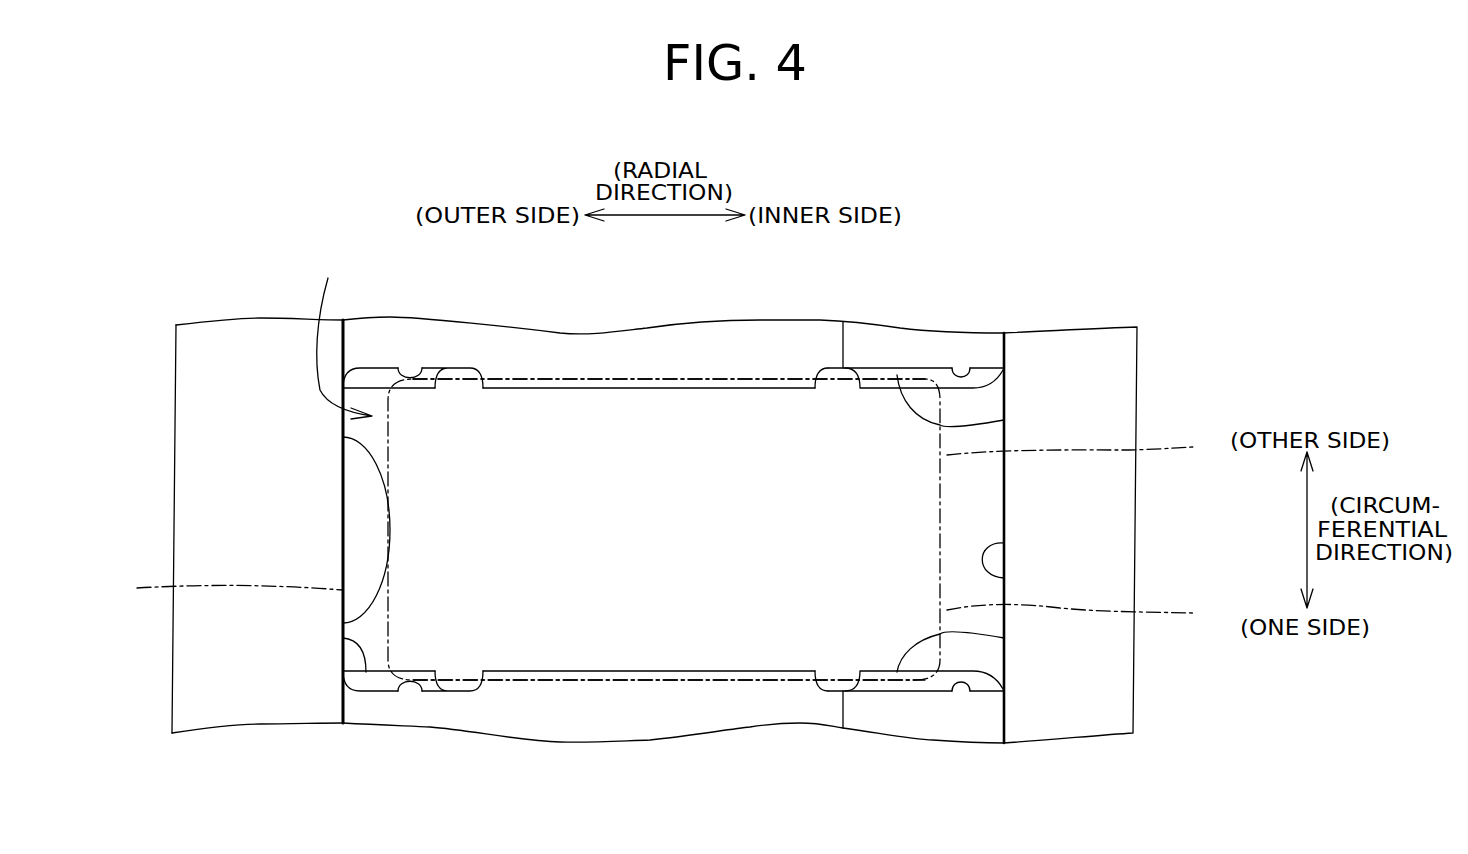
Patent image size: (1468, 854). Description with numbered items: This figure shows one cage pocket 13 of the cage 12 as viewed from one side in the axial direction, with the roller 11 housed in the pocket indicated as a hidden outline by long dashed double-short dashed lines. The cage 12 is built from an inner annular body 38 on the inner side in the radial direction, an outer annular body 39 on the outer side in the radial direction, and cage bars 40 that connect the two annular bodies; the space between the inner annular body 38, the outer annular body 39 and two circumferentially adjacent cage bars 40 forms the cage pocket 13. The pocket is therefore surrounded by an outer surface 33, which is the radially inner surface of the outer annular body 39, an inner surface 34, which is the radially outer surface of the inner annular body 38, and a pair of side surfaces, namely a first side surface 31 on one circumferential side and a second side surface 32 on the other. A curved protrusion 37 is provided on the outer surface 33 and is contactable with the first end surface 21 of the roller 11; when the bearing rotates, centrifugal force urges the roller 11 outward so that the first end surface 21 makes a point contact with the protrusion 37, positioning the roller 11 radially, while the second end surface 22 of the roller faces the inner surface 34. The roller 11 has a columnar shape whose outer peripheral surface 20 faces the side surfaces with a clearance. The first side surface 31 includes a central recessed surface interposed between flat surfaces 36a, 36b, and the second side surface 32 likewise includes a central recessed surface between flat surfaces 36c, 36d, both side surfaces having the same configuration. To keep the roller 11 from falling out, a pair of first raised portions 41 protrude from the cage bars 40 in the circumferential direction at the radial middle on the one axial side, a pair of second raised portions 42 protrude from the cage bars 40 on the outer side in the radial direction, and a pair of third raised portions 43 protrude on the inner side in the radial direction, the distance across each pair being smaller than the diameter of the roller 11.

The roller 11 is at (1084, 448).
The cage 12 is at (157, 536).
The cage pocket 13 is at (343, 334).
The outer peripheral surface 20 is at (550, 690).
The first end surface 21 is at (225, 592).
The second end surface 22 is at (1084, 612).
The first side surface 31 is at (1004, 638).
The second side surface 32 is at (1004, 420).
The outer surface 33 is at (366, 693).
The inner surface 34 is at (1004, 543).
The flat surface 36a is at (408, 688).
The flat surface 36b is at (953, 690).
The flat surface 36c is at (410, 372).
The flat surface 36d is at (953, 374).
The protrusion 37 is at (390, 528).
The inner annular body 38 is at (1120, 493).
The outer annular body 39 is at (182, 462).
The cage bar 40 is at (647, 342).
The first raised portion 41 is at (765, 388).
The second raised portion 42 is at (413, 388).
The third raised portion 43 is at (893, 386).